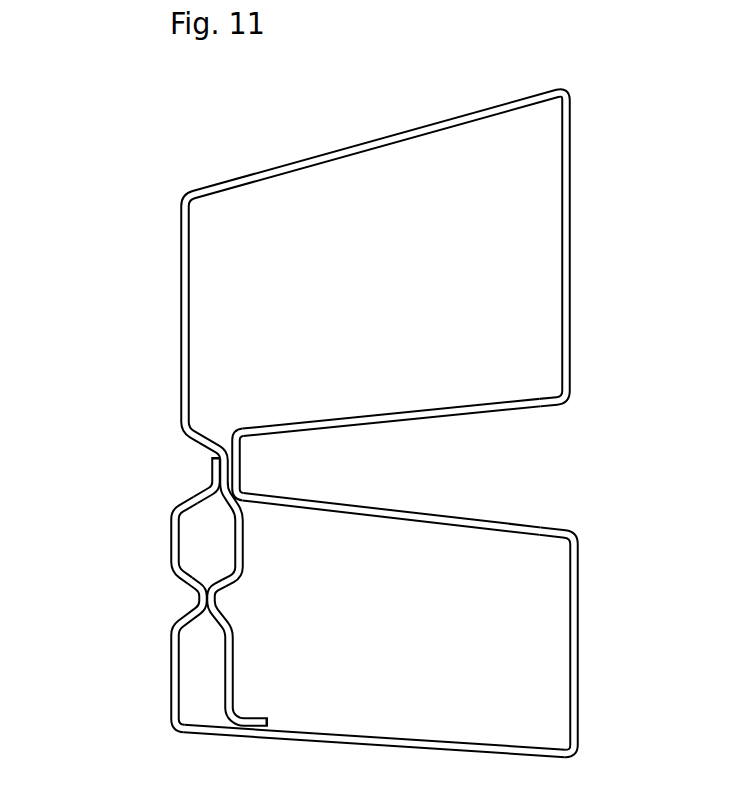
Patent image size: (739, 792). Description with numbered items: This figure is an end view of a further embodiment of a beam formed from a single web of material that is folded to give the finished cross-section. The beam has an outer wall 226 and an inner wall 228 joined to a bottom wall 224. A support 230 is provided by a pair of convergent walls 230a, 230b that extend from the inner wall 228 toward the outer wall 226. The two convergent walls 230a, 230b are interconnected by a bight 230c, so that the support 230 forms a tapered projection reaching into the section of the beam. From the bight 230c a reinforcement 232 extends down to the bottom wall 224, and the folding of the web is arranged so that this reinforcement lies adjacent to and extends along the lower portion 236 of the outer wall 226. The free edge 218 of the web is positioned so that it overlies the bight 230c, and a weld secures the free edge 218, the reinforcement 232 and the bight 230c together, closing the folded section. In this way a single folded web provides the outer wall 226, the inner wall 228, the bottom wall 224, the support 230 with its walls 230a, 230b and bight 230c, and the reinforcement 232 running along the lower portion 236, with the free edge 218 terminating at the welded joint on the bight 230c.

The free edge 218 is at (212, 459).
The bottom wall 224 is at (414, 702).
The outer wall 226 is at (182, 300).
The inner wall 228 is at (577, 641).
The support 230 is at (443, 475).
The convergent wall 230a is at (373, 424).
The convergent wall 230b is at (404, 514).
The bight 230c is at (318, 478).
The reinforcement 232 is at (233, 588).
The lower portion 236 is at (171, 549).